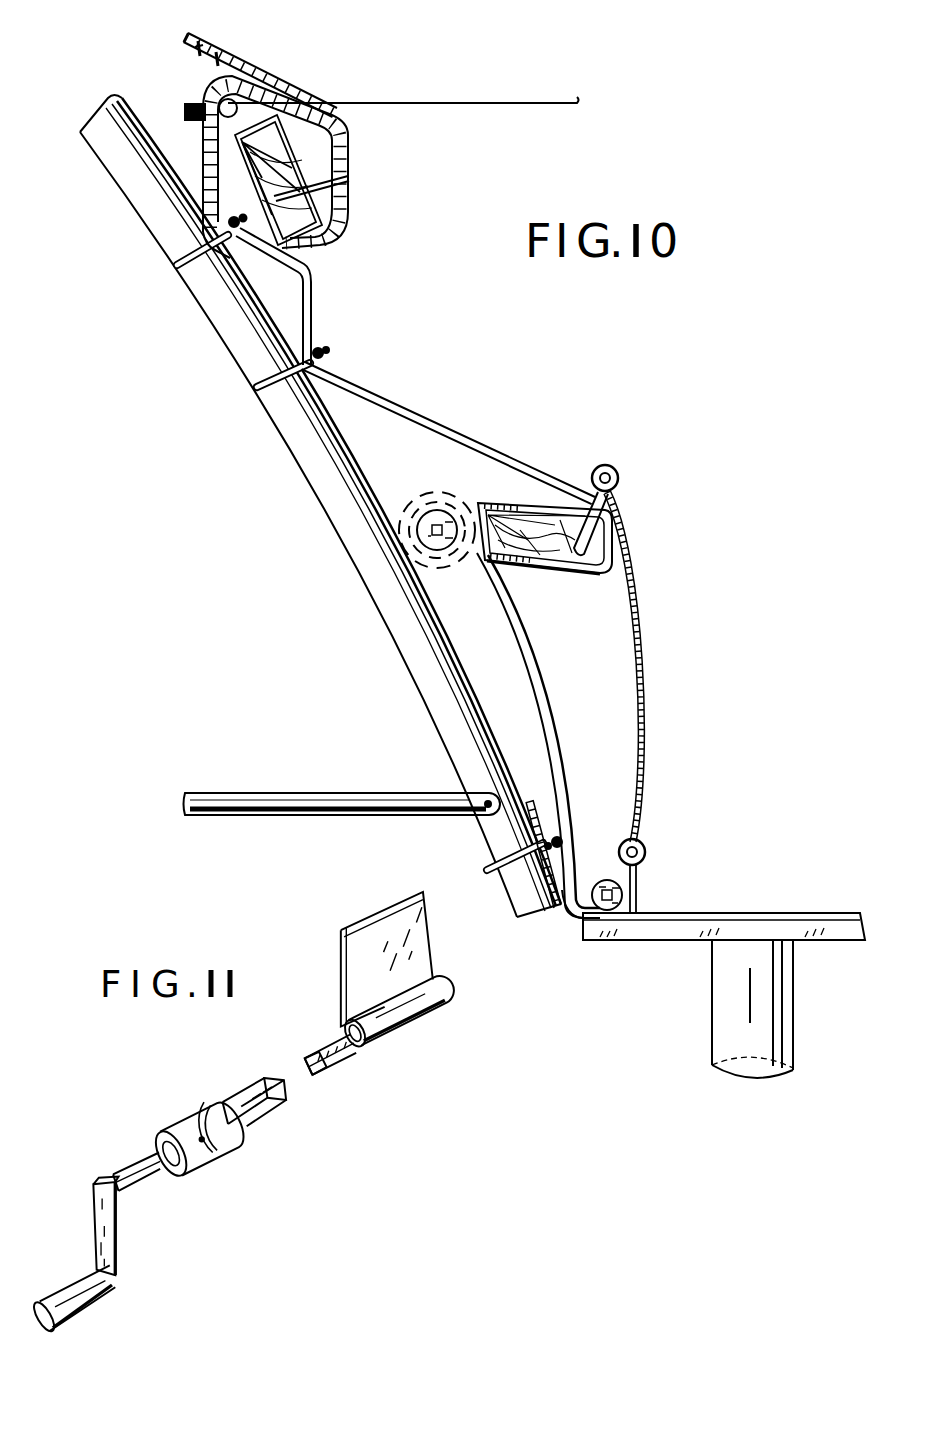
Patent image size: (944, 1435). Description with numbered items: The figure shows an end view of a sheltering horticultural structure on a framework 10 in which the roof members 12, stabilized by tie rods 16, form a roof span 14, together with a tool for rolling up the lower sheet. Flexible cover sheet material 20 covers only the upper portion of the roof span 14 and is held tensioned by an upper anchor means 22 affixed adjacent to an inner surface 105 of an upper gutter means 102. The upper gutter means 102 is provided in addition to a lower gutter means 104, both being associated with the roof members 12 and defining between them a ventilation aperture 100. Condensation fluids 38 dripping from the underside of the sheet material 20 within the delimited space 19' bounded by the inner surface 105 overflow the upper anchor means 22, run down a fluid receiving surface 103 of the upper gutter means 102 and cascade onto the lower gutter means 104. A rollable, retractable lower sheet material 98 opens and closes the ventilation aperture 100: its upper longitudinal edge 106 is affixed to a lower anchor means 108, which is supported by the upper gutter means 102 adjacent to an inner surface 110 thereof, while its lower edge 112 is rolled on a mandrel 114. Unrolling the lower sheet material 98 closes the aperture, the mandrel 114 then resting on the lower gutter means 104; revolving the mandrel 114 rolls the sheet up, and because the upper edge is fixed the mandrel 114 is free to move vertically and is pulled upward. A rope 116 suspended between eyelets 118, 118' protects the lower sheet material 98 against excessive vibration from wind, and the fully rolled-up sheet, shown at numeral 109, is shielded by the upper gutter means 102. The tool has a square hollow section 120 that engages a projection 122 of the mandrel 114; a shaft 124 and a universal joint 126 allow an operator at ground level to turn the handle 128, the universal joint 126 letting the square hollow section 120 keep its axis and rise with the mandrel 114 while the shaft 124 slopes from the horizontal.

In FIG. 10, the framework 10 is at (717, 1023).
In FIG. 10, the roof member 12 is at (347, 540).
In FIG. 10, the roof span 14 is at (105, 74).
In FIG. 10, the tie rod 16 is at (277, 793).
In FIG. 10, the delimited space 19' is at (403, 82).
In FIG. 10, the flexible cover sheet material 20 is at (257, 73).
In FIG. 10, the upper anchor means 22 is at (330, 233).
In FIG. 10, the condensation fluids 38 is at (197, 50).
In FIG. 10, the lower sheet material 98 is at (550, 727).
In FIG. 11, the lower sheet material 98 is at (318, 950).
In FIG. 10, the ventilation aperture 100 is at (588, 638).
In FIG. 10, the upper gutter means 102 is at (537, 443).
In FIG. 10, the fluid receiving surface 103 is at (307, 273).
In FIG. 10, the lower gutter means 104 is at (537, 820).
In FIG. 10, the inner surface 105 is at (220, 182).
In FIG. 10, the upper longitudinal edge 106 is at (603, 550).
In FIG. 10, the lower anchor means 108 is at (516, 507).
In FIG. 10, the fully rolled-up lower sheet material 109 is at (440, 478).
In FIG. 10, the inner surface 110 is at (433, 420).
In FIG. 10, the lower edge 112 is at (620, 910).
In FIG. 10, the mandrel 114 is at (583, 920).
In FIG. 11, the mandrel 114 is at (337, 1043).
In FIG. 10, the rope 116 is at (645, 707).
In FIG. 10, the eyelet 118 is at (641, 470).
In FIG. 10, the eyelet 118' is at (666, 862).
In FIG. 11, the square hollow section 120 is at (257, 1083).
In FIG. 11, the projection 122 is at (287, 1037).
In FIG. 11, the shaft 124 is at (127, 1133).
In FIG. 11, the universal joint 126 is at (170, 1090).
In FIG. 11, the handle 128 is at (67, 1253).